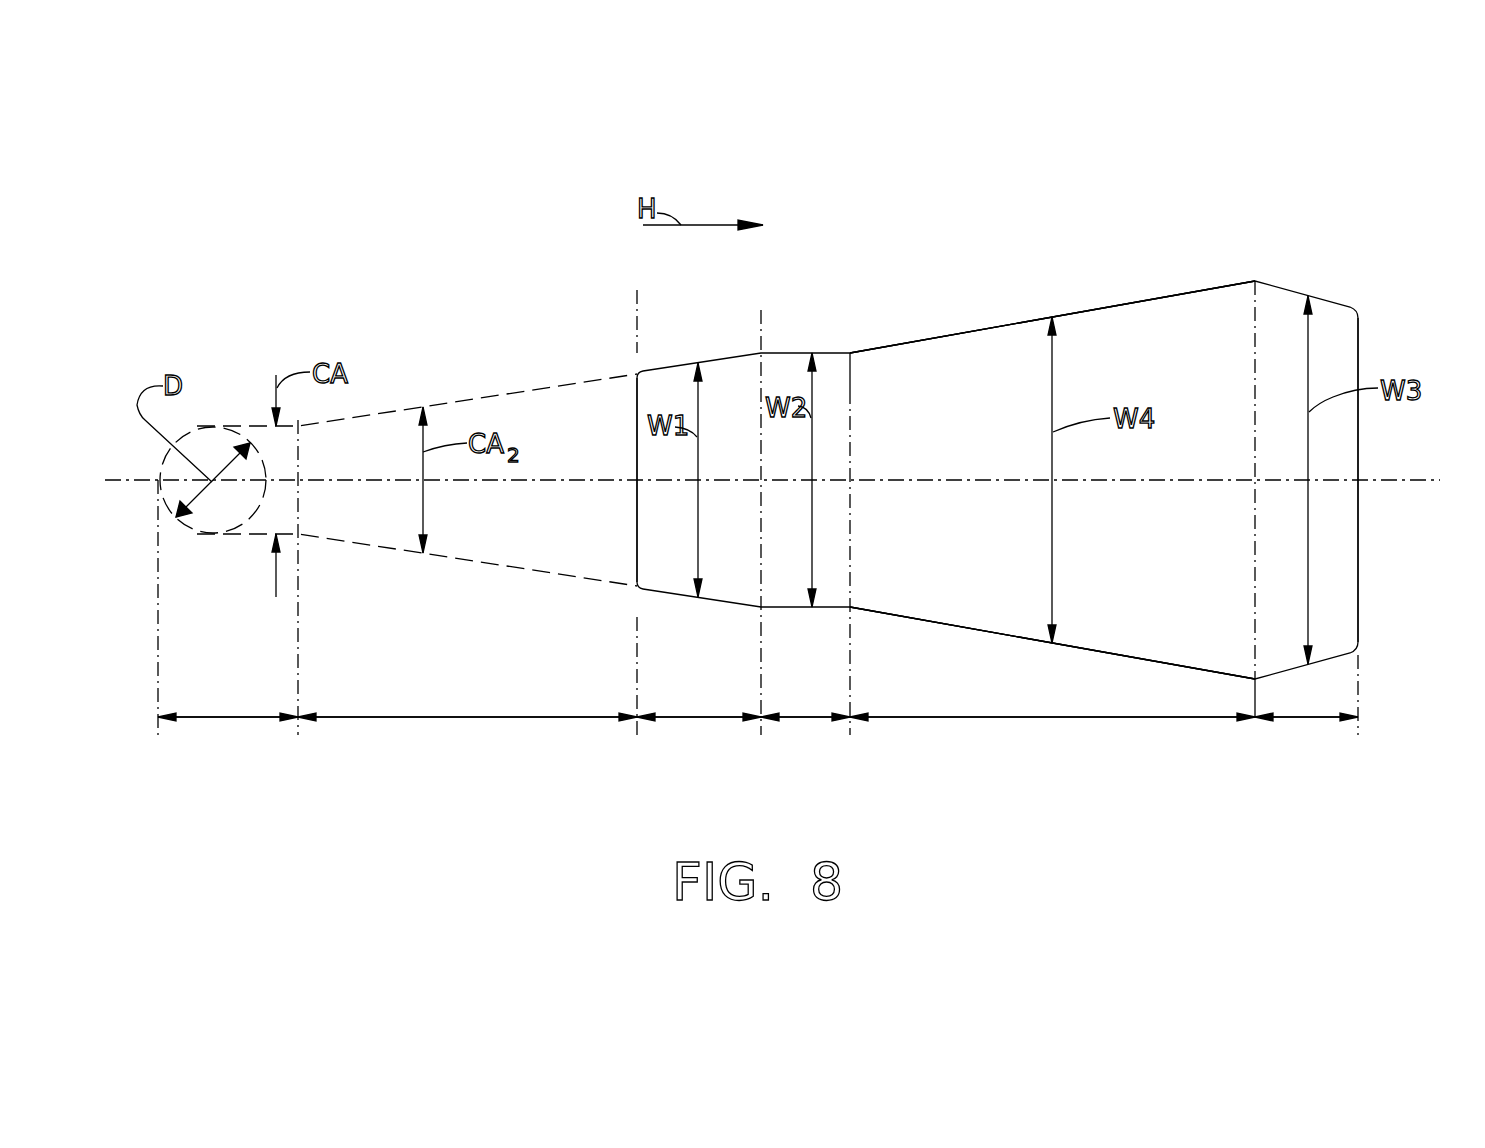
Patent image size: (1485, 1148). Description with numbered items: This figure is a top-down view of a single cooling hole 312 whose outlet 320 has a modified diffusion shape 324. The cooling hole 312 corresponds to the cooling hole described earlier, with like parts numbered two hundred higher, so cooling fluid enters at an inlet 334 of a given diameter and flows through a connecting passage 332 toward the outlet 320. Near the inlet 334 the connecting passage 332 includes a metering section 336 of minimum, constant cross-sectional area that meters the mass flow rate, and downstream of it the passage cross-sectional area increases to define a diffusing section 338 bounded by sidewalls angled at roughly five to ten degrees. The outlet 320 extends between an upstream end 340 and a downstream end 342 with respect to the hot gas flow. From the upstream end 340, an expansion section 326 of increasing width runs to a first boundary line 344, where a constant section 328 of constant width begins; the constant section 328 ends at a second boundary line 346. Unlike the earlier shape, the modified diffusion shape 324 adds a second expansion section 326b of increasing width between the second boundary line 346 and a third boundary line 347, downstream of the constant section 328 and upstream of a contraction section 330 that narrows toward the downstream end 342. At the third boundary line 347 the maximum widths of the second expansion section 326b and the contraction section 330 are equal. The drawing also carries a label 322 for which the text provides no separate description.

The cooling hole 312 is at (1076, 176).
The outlet 320 is at (1115, 617).
The tapered section 322 is at (955, 251).
The modified diffusion shape 324 is at (1118, 299).
The expansion section 326 is at (688, 720).
The second expansion section 326b is at (1073, 720).
The constant section 328 is at (810, 720).
The contraction section 330 is at (1302, 720).
The connecting passage 332 is at (455, 413).
The inlet 334 is at (208, 425).
The metering section 336 is at (227, 720).
The diffusing section 338 is at (423, 720).
The upstream end 340 is at (635, 403).
The downstream end 342 is at (1360, 332).
The first boundary line 344 is at (762, 382).
The second boundary line 346 is at (850, 387).
The third boundary line 347 is at (1255, 317).